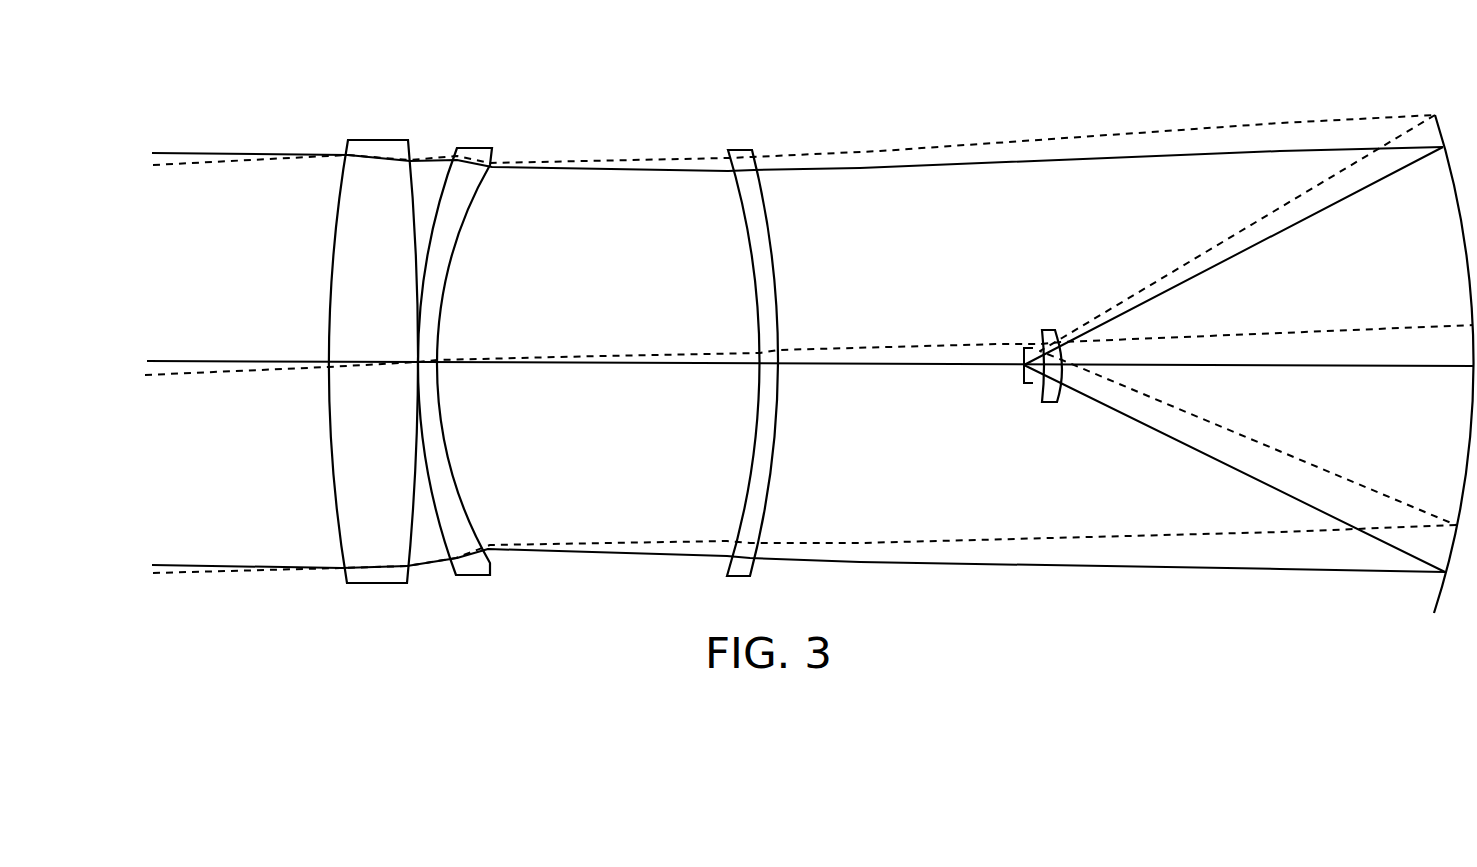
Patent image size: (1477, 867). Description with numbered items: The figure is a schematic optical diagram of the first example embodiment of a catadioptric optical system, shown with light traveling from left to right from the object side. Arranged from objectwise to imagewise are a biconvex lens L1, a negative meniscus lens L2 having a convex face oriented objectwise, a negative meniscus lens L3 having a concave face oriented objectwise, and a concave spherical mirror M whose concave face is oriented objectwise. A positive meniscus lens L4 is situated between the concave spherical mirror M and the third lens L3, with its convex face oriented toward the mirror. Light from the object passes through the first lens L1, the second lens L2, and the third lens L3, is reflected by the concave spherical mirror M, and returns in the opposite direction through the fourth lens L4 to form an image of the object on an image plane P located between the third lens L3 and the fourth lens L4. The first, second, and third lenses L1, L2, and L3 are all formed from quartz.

The biconvex lens L1 is at (377, 140).
The negative meniscus lens L2 is at (473, 148).
The negative meniscus lens L3 is at (738, 150).
The positive meniscus lens L4 is at (1048, 330).
The image plane P is at (1023, 381).
The concave spherical mirror M is at (1450, 167).